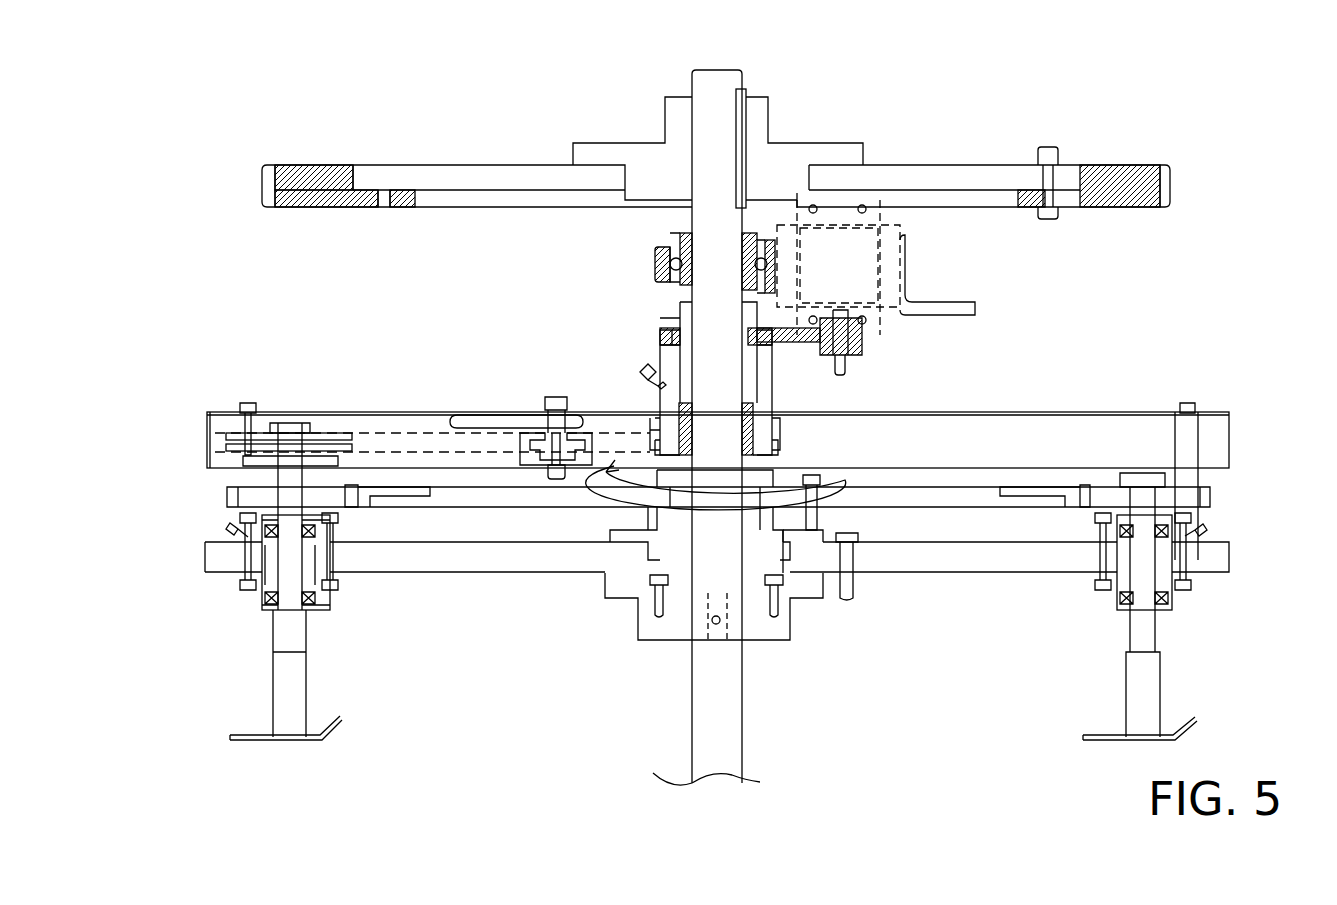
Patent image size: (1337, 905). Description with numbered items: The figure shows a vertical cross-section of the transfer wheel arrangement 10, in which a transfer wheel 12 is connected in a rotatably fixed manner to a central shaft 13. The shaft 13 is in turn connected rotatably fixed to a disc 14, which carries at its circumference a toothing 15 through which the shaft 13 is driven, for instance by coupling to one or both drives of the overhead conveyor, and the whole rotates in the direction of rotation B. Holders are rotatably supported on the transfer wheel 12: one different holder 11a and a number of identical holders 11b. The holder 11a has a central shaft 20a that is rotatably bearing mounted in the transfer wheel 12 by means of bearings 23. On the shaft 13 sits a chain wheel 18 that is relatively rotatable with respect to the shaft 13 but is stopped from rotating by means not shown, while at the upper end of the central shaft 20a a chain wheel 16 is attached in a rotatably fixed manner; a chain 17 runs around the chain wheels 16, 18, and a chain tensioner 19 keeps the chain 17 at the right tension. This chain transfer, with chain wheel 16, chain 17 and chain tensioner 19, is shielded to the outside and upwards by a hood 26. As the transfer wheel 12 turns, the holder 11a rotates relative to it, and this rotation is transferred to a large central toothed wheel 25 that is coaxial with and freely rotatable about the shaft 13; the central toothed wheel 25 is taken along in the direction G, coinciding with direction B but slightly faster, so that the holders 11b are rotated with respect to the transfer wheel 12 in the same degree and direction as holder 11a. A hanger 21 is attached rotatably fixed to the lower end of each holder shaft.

The rotary indexing apparatus 10 is at (341, 307).
The holder 11a is at (285, 636).
The holder 11b is at (1135, 633).
The transfer wheel 12 is at (215, 573).
The shaft 13 is at (705, 106).
The disc 14 is at (470, 178).
The toothing 15 is at (270, 185).
The chain wheel 16 is at (295, 440).
The chain 17 is at (400, 440).
The chain wheel 18 is at (775, 440).
The chain tensioner 19 is at (588, 426).
The central shaft 20a is at (378, 500).
The hanger 21 is at (296, 698).
The bearings 23 is at (318, 540).
The central toothed wheel 25 is at (500, 503).
The hood 26 is at (362, 410).
The direction of rotation B is at (696, 34).
The direction G is at (644, 441).